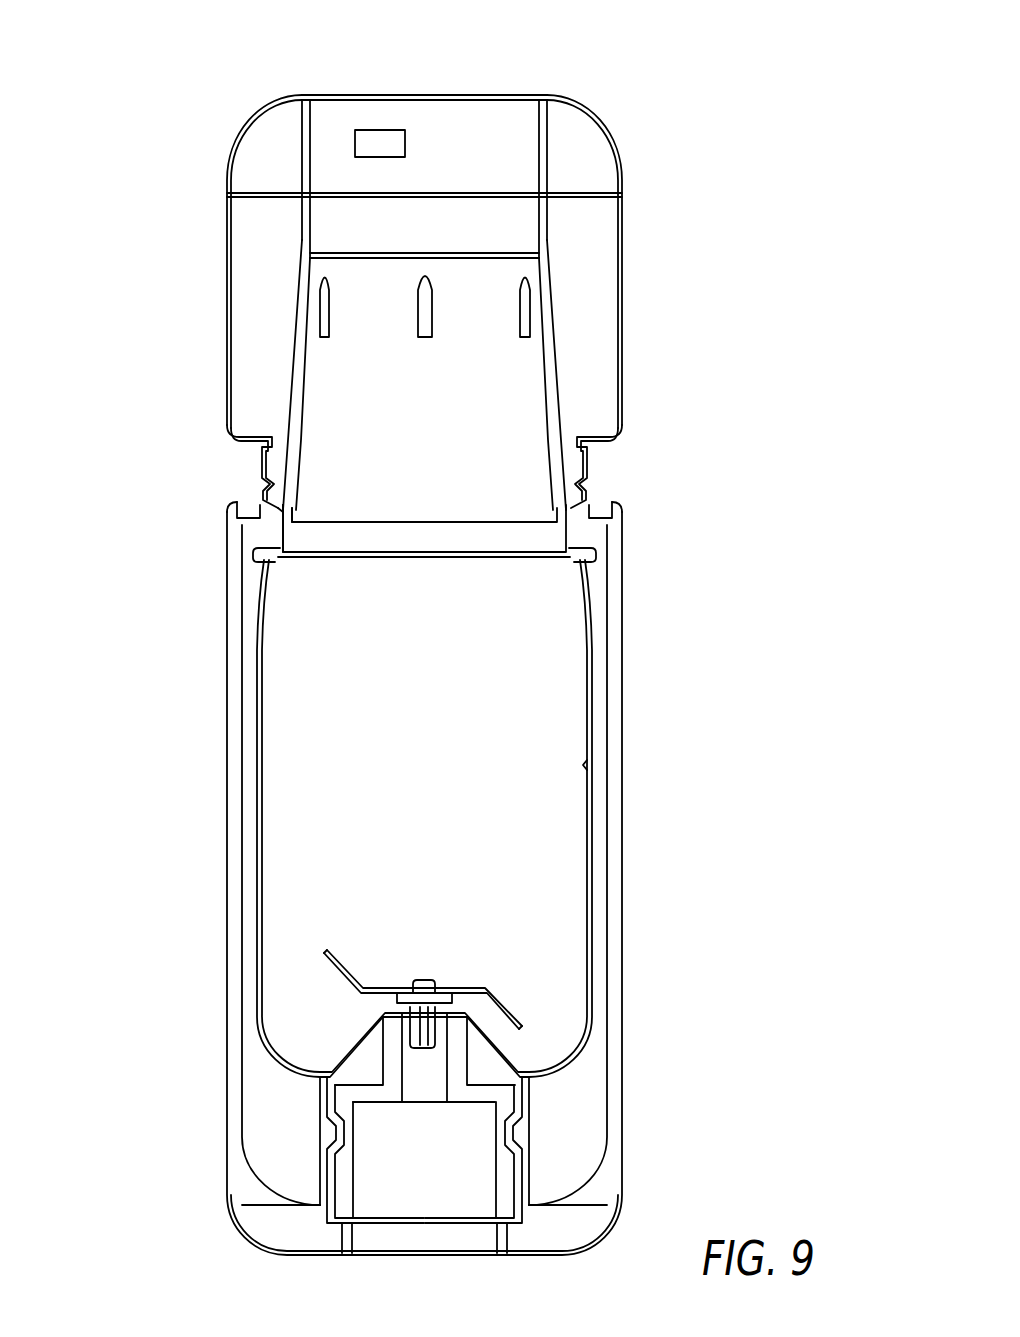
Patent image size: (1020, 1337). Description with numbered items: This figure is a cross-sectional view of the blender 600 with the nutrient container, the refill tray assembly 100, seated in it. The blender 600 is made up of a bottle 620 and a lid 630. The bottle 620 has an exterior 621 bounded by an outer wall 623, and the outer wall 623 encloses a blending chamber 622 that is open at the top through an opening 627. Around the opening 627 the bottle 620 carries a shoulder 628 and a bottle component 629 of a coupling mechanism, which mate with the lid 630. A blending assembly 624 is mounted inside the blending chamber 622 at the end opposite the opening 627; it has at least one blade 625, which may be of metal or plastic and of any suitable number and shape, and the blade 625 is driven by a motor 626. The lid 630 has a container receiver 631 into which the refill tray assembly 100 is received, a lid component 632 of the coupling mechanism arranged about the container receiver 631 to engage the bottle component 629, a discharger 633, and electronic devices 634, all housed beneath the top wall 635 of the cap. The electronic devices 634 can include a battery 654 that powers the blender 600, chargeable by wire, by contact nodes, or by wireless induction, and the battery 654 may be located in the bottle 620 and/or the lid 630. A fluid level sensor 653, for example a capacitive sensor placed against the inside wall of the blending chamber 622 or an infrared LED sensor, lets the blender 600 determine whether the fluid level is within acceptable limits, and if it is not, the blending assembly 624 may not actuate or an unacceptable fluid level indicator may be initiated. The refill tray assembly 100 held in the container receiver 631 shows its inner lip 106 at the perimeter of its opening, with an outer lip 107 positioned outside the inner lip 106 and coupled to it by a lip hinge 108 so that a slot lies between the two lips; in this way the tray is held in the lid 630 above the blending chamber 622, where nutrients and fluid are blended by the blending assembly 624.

The blender 600 is at (625, 72).
The top wall of cap 635 is at (425, 101).
The battery 654 is at (353, 135).
The electronic devices 634 is at (470, 147).
The discharger 633 is at (470, 220).
The container receiver 631 is at (547, 283).
The lid 630 is at (624, 329).
The lid component 632 is at (583, 485).
The bottle component 629 is at (597, 480).
The lip hinge 108 is at (288, 512).
The inner lip 106 is at (292, 537).
The outer lip 107 is at (278, 558).
The refill tray assembly 100 is at (350, 500).
The fluid level sensor 653 is at (260, 768).
The opening 627 is at (420, 576).
The shoulder 628 is at (583, 565).
The exterior 621 is at (622, 632).
The blending chamber 622 is at (592, 710).
The bottle 620 is at (624, 826).
The outer wall 623 is at (610, 973).
The blending assembly 624 is at (465, 966).
The blade 625 is at (350, 973).
The motor 626 is at (453, 1135).